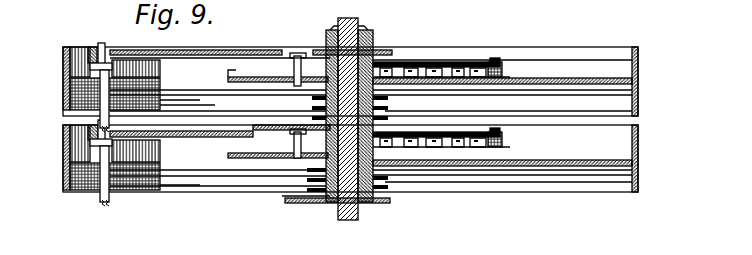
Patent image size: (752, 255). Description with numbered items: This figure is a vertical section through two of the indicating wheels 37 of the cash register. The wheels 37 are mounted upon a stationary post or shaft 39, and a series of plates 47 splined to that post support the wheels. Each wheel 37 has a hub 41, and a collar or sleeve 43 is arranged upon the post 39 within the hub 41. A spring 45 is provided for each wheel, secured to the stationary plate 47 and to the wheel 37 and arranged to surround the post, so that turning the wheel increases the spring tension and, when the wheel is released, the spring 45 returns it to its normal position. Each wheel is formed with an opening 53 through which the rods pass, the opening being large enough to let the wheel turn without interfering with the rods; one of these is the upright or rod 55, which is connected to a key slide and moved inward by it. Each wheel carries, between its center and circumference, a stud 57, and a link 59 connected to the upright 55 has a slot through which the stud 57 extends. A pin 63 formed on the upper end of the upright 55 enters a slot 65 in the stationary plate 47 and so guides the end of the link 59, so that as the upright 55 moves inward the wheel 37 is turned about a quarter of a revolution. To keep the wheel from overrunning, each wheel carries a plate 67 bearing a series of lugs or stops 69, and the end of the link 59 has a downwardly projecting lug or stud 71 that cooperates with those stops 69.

The indicating wheel 37 is at (68, 80).
The stationary post or shaft 39 is at (347, 222).
The hub 41 is at (366, 206).
The collar or sleeve 43 is at (374, 50).
The spring 45 is at (390, 99).
The stationary plate 47 is at (263, 125).
The opening 53 is at (160, 106).
The upright or rod 55 is at (100, 108).
The stud 57 is at (298, 52).
The link 59 is at (470, 66).
The pin 63 is at (102, 44).
The slot 65 is at (200, 54).
The plate 67 is at (553, 76).
The lugs or stops 69 is at (432, 72).
The lug or stud 71 is at (500, 76).